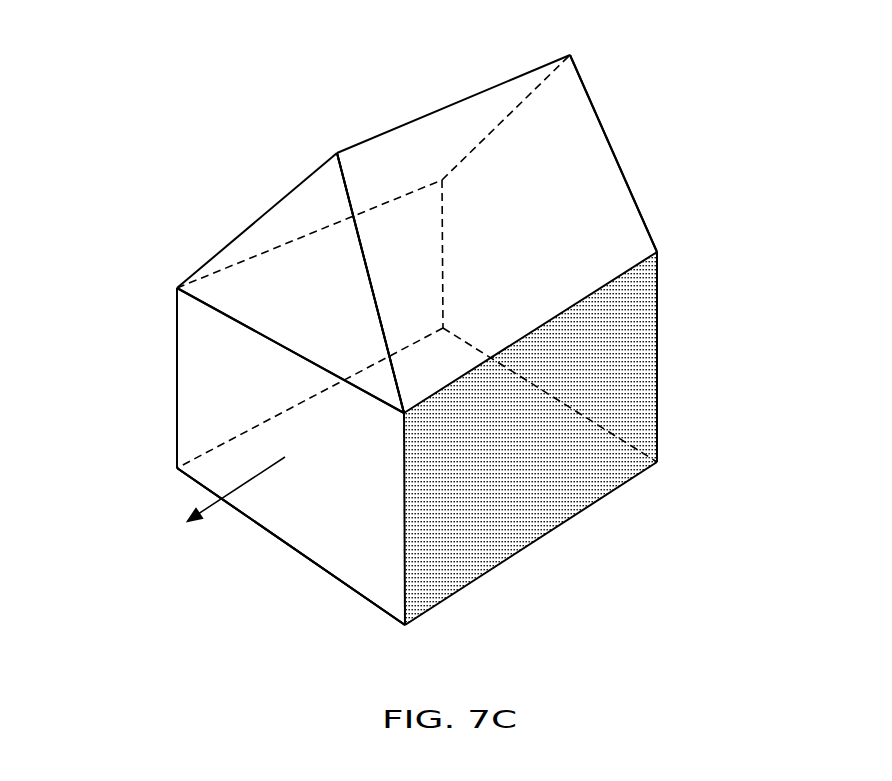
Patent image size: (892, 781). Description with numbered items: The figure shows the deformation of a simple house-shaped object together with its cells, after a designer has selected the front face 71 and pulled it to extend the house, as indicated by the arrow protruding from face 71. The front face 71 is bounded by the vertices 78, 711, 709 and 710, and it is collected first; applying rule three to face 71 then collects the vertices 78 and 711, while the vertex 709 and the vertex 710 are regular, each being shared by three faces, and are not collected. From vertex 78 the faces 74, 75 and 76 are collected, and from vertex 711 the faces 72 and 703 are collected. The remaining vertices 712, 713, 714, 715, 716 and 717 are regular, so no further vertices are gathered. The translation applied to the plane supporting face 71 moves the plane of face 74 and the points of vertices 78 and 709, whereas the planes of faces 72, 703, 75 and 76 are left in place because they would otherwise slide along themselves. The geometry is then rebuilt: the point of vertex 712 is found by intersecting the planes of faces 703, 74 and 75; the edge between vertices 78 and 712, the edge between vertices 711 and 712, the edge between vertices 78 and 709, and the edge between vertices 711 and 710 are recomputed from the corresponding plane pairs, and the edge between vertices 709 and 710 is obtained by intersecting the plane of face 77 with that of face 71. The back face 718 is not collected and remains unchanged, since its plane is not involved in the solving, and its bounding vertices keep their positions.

The front face 71 is at (382, 504).
The face 72 is at (569, 461).
The face 74 is at (352, 323).
The face 75 is at (282, 217).
The face 76 is at (210, 376).
The face 77 is at (332, 537).
The vertex 78 is at (175, 288).
The face 703 is at (566, 120).
The vertex 709 is at (175, 468).
The vertex 710 is at (407, 628).
The vertex 711 is at (404, 414).
The vertex 712 is at (335, 153).
The vertex 713 is at (445, 325).
The vertex 714 is at (660, 463).
The vertex 715 is at (660, 252).
The vertex 716 is at (568, 55).
The vertex 717 is at (441, 178).
The back face 718 is at (600, 237).